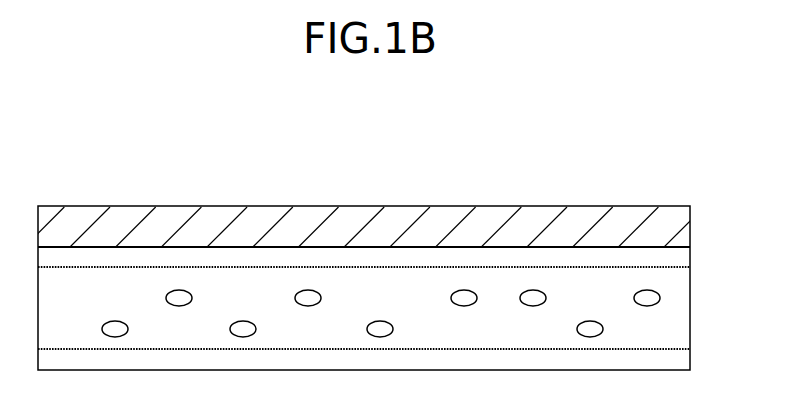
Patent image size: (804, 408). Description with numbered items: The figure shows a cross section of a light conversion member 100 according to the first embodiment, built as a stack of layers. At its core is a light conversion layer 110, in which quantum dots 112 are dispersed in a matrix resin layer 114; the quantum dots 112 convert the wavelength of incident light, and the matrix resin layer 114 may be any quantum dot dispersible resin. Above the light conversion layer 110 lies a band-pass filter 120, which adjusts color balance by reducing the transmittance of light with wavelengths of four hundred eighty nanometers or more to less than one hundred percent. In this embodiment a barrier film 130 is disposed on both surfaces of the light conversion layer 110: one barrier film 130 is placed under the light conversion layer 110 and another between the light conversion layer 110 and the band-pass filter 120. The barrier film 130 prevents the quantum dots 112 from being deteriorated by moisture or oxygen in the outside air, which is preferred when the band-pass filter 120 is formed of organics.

The light conversion member 100 is at (75, 178).
The light conversion layer 110 is at (415, 308).
The quantum dots 112 is at (657, 298).
The matrix resin layer 114 is at (682, 329).
The band-pass filter 120 is at (682, 227).
The barrier film 130 is at (682, 258).